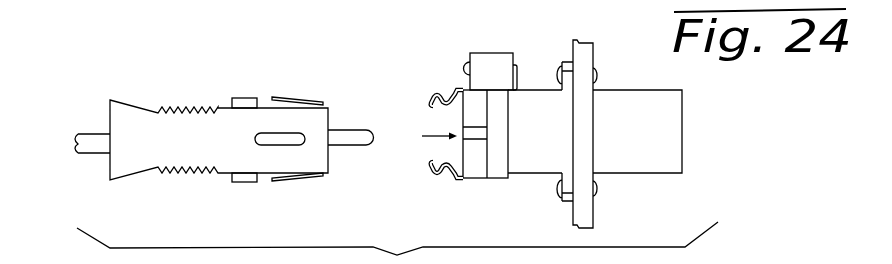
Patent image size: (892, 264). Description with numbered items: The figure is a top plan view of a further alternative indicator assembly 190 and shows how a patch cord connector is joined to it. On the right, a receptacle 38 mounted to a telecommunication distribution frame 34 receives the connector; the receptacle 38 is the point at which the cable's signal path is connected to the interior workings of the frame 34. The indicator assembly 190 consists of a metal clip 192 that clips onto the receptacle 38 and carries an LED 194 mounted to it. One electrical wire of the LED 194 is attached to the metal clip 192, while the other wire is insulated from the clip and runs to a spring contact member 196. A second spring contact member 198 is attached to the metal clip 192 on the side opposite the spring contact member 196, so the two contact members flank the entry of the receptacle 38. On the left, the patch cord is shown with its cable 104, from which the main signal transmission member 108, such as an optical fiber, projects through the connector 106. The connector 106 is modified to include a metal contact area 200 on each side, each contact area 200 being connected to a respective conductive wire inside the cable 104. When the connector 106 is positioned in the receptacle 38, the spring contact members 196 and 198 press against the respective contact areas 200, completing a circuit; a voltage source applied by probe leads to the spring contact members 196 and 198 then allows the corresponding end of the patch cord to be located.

The cable 104 is at (92, 137).
The connector 106 is at (180, 98).
The metal contact area 200 is at (245, 97).
The main signal transmission member 108 is at (342, 130).
The indicator assembly 190 is at (383, 168).
The metal clip 192 is at (497, 178).
The LED 194 is at (465, 68).
The spring contact member 196 is at (432, 92).
The second spring contact member 198 is at (436, 178).
The receptacle 38 is at (556, 138).
The telecommunication distribution frame 34 is at (592, 210).